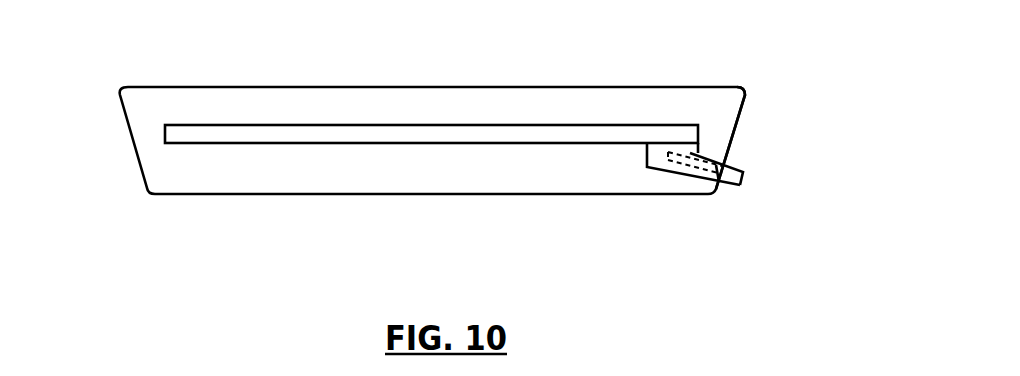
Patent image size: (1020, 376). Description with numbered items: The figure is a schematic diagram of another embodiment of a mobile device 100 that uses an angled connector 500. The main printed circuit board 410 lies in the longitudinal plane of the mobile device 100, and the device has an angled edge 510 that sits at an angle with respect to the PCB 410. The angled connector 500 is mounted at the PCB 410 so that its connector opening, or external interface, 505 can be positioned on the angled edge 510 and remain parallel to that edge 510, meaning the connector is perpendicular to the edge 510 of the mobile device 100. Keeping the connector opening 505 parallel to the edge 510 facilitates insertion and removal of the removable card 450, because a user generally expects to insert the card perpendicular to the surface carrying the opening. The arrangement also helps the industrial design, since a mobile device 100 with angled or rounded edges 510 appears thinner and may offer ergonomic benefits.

The mobile device 100 is at (124, 214).
The main printed circuit board 410 is at (529, 126).
The angled edge 510 is at (733, 130).
The angled connector 500 is at (655, 168).
The removable card 450 is at (745, 172).
The connector opening 505 is at (719, 183).